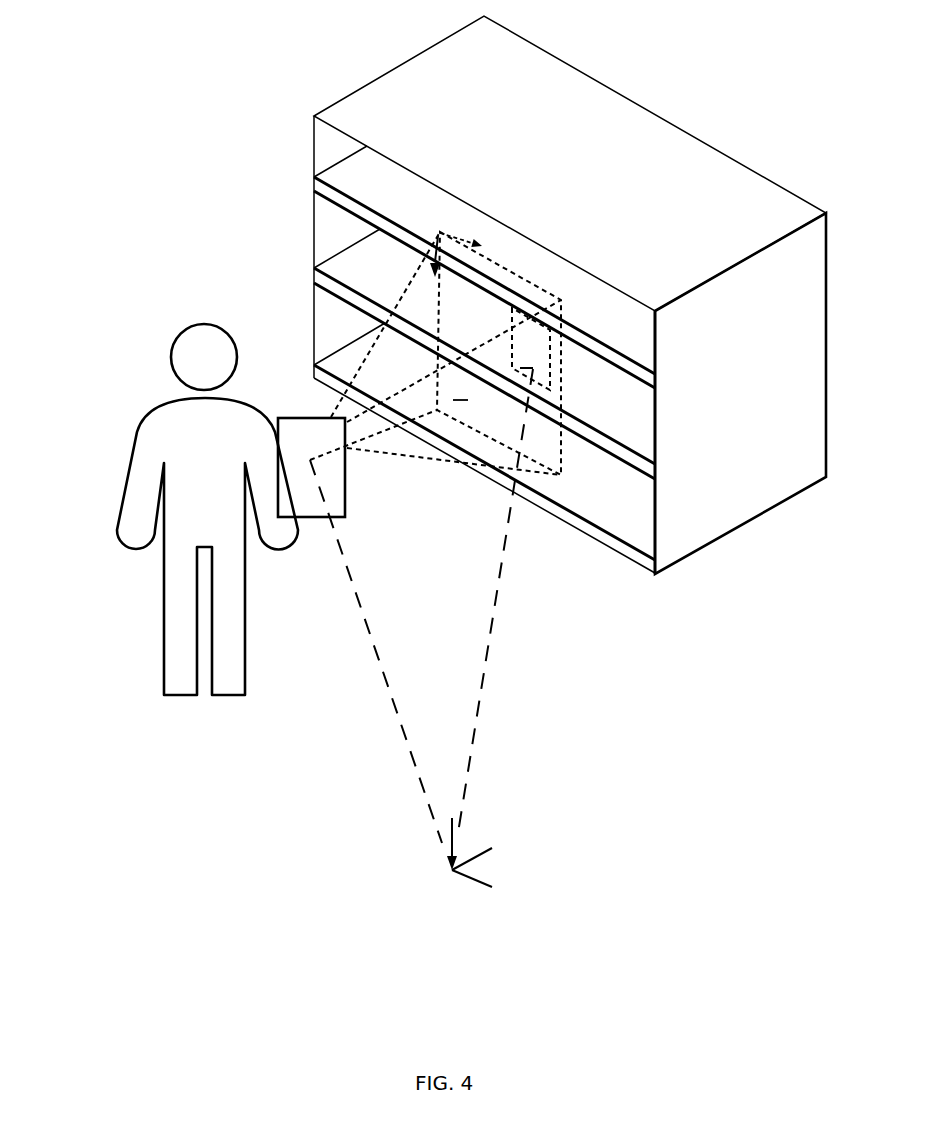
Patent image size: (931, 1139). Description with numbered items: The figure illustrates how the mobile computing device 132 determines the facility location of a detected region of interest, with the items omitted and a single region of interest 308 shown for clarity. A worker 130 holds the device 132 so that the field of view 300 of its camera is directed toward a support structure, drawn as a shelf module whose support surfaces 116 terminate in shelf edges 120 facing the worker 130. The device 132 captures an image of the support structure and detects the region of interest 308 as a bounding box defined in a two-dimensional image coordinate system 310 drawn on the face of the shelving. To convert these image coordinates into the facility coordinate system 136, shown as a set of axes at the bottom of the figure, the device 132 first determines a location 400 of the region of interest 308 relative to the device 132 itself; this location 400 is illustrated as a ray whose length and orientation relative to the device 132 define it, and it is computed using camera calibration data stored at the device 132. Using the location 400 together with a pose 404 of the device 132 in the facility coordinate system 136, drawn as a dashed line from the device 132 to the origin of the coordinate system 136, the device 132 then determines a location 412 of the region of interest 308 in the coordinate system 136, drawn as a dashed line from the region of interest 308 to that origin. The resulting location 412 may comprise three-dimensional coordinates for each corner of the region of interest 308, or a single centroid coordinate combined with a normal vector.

The support surface 116 is at (367, 178).
The shelf edge 120 is at (608, 347).
The worker 130 is at (162, 596).
The mobile computing device 132 is at (292, 417).
The coordinate system 136 is at (452, 872).
The field of view 300 is at (408, 456).
The region of interest 308 is at (550, 367).
The image coordinate system 310 is at (437, 235).
The location 400 is at (463, 400).
The pose 404 is at (376, 651).
The location 412 is at (498, 601).